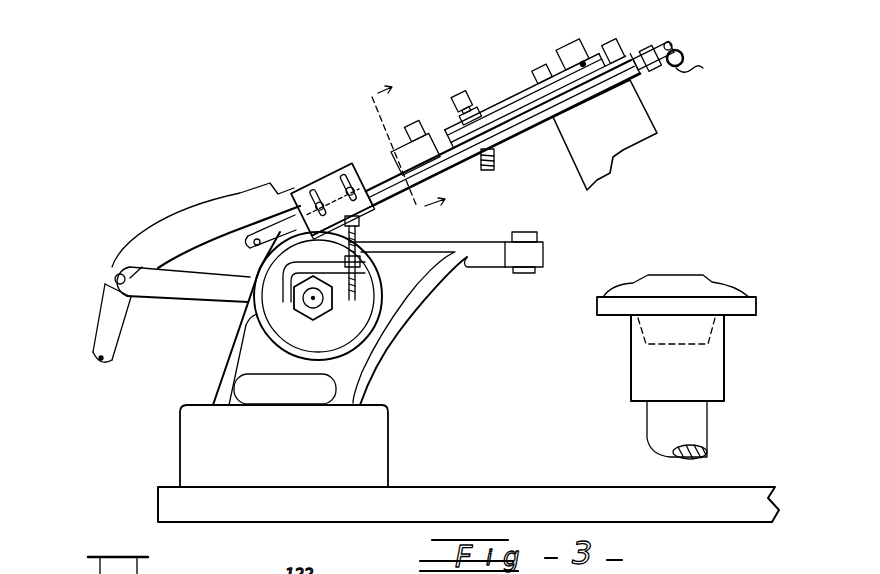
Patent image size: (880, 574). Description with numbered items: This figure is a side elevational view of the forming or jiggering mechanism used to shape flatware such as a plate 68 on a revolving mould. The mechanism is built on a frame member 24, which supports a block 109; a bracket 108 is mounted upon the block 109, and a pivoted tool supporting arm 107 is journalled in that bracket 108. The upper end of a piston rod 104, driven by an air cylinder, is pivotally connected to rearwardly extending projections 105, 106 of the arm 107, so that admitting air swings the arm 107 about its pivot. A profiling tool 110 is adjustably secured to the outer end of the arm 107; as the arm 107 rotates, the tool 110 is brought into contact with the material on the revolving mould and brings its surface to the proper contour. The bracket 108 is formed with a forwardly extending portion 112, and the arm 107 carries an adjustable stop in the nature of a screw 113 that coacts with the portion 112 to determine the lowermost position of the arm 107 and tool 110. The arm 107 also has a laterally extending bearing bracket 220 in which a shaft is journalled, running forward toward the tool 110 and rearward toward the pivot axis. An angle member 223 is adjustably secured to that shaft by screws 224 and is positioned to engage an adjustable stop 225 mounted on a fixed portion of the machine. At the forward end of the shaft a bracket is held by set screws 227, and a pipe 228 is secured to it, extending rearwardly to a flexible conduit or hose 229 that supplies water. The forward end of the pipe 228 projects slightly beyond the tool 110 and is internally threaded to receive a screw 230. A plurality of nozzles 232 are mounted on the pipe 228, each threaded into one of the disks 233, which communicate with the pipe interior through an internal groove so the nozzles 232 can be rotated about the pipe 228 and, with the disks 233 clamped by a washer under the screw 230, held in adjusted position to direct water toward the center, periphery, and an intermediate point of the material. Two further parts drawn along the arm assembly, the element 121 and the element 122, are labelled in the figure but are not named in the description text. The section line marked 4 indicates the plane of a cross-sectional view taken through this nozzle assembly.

The section line 4- 4 is at (417, 139).
The frame member 24 is at (467, 499).
The plate 68 is at (713, 287).
The piston rod 104 is at (93, 347).
The rearwardly extending projection 105 is at (213, 215).
The rearwardly extending projection 106 is at (208, 290).
The arm 107 is at (460, 165).
The bracket 108 is at (233, 342).
The block 109 is at (306, 445).
The profiling tool 110 is at (633, 112).
The forwardly extending portion 112 is at (498, 258).
The screw 113 is at (497, 160).
The intermediate bar 121 is at (497, 113).
The rail 122 is at (442, 134).
The bearing bracket 220 is at (432, 128).
The angle member 223 is at (366, 208).
The screws 224 is at (333, 184).
The adjustable stop 225 is at (358, 222).
The set screws 227 is at (582, 63).
The pipe 228 is at (646, 60).
The flexible conduit or hose 229 is at (248, 237).
The screw 230 is at (684, 50).
The nozzles 232 is at (690, 72).
The disks 233 is at (668, 42).